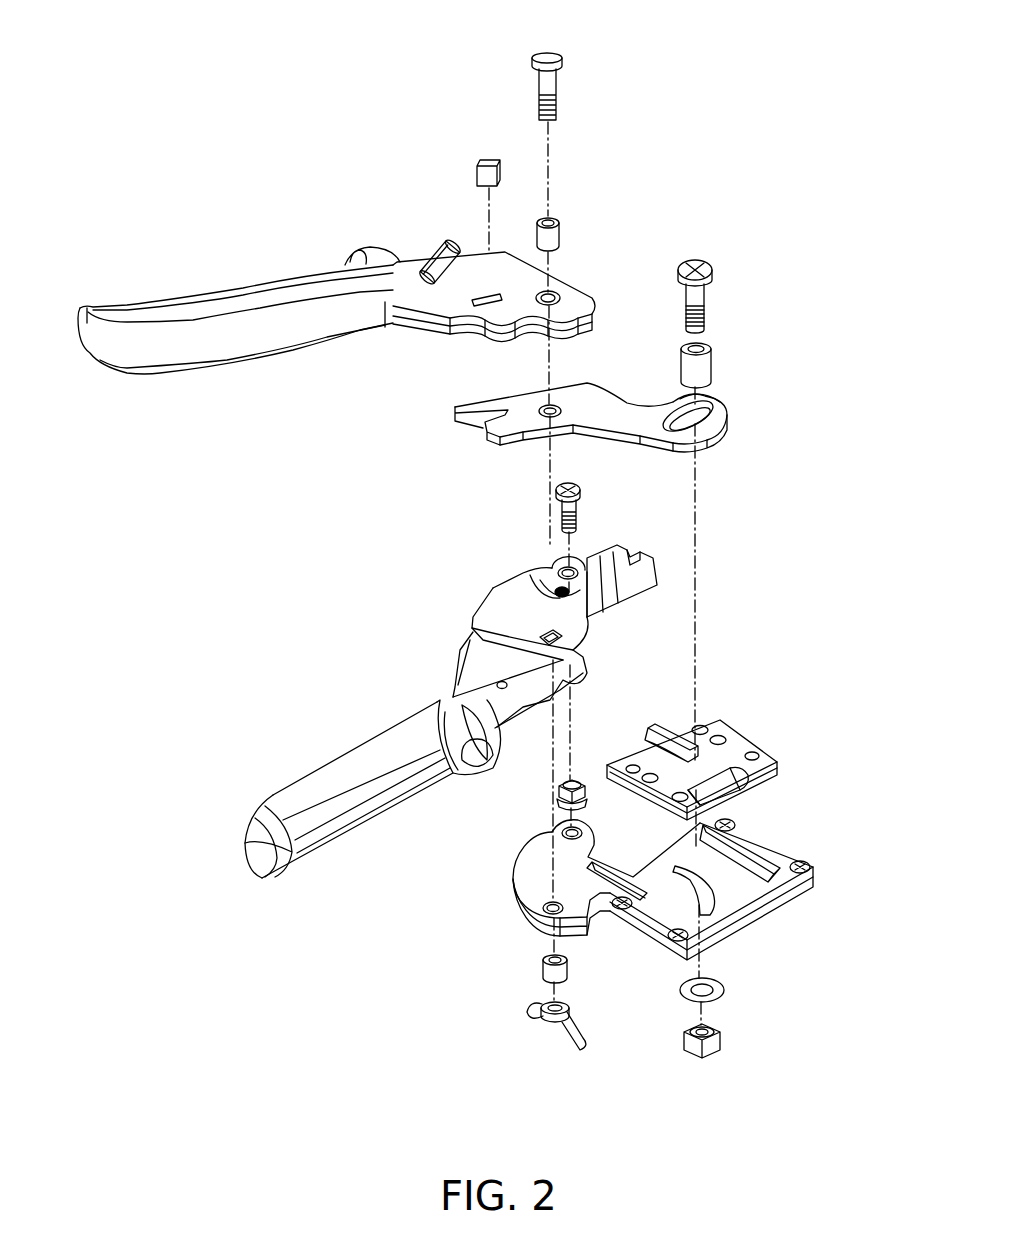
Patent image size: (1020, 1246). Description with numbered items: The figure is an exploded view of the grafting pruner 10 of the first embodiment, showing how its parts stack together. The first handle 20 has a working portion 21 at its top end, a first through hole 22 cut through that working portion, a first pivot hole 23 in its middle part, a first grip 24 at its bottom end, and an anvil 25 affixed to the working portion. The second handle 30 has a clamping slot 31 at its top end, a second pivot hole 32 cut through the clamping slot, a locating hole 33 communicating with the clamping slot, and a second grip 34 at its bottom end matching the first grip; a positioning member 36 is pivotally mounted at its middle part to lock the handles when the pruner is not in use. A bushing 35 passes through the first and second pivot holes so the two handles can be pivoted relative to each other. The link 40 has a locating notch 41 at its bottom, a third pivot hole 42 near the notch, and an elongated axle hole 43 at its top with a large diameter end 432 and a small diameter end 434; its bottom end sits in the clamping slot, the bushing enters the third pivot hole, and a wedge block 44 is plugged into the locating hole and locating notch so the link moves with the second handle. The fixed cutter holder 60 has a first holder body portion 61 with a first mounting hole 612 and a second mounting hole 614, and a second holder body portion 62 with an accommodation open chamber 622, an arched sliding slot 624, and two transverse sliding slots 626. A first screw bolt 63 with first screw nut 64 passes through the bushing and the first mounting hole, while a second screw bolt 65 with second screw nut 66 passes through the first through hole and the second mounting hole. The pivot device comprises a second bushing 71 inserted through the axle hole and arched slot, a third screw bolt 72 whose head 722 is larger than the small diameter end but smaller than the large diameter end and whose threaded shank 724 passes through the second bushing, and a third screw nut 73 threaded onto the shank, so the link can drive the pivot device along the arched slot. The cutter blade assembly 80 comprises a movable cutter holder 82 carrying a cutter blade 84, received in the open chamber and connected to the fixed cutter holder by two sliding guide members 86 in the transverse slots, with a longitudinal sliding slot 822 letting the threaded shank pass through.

The grafting pruner 10 is at (240, 155).
The first handle 20 is at (234, 896).
The working portion 21 is at (530, 577).
The first through hole 22 is at (560, 571).
The first pivot hole 23 is at (538, 637).
The first grip 24 is at (337, 772).
The anvil 25 is at (625, 598).
The second handle 30 is at (146, 384).
The clamping slot 31 is at (562, 325).
The second pivot hole 32 is at (552, 295).
The locating hole 33 is at (478, 304).
The second grip 34 is at (182, 300).
The bushing 35 is at (556, 234).
The positioning member 36 is at (440, 240).
The link 40 is at (628, 384).
The locating notch 41 is at (472, 432).
The third pivot hole 42 is at (541, 418).
The axle hole 43 is at (708, 440).
The large diameter end 432 is at (683, 426).
The small diameter end 434 is at (720, 408).
The wedge block 44 is at (484, 160).
The fixed cutter holder 60 is at (492, 898).
The first holder body portion 61 is at (525, 872).
The first mounting hole 612 is at (548, 912).
The second mounting hole 614 is at (562, 833).
The second holder body portion 62 is at (765, 918).
The accommodation open chamber 622 is at (736, 896).
The arched sliding slot 624 is at (735, 900).
The transverse sliding slots 626 is at (745, 868).
The first screw bolt 63 is at (555, 80).
The first screw nut 64 is at (545, 1020).
The second screw bolt 65 is at (578, 494).
The second screw nut 66 is at (560, 790).
The second bushing 71 is at (700, 368).
The third screw bolt 72 is at (815, 216).
The head 722 is at (697, 262).
The threaded shank 724 is at (700, 290).
The third screw nut 73 is at (695, 1060).
The cutter blade assembly 80 is at (792, 746).
The movable cutter holder 82 is at (735, 720).
The longitudinal sliding slot 822 is at (728, 777).
The cutter blade 84 is at (650, 730).
The sliding guide members 86 is at (633, 765).